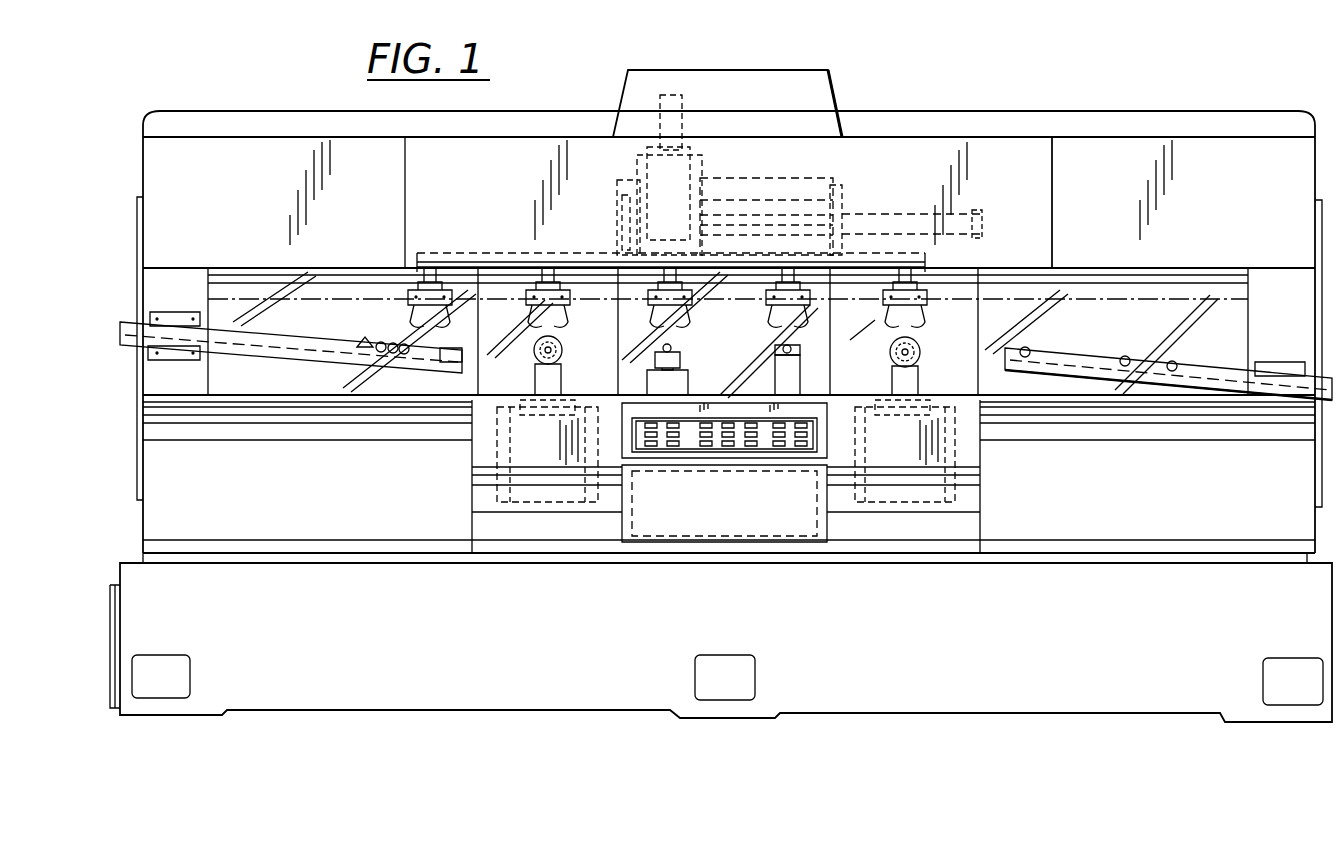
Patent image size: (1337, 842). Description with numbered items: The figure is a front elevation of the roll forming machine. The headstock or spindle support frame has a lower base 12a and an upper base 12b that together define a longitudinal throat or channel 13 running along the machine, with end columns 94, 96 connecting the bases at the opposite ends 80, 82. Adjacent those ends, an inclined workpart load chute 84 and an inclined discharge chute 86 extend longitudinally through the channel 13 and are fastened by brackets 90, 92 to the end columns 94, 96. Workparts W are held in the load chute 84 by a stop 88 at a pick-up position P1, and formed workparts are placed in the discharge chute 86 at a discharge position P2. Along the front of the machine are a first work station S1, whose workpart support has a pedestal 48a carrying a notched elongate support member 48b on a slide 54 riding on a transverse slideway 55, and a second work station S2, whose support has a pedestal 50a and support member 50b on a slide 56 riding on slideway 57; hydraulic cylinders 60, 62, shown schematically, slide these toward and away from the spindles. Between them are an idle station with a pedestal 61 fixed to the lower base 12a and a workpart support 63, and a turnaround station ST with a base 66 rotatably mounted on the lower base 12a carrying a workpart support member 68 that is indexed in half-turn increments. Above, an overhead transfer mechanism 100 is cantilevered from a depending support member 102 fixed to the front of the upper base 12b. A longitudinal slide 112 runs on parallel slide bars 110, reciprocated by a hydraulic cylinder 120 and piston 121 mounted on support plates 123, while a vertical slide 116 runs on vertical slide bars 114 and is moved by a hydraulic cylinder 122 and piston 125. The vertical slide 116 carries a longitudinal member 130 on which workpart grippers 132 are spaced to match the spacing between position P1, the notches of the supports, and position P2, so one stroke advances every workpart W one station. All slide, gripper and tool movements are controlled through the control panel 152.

The machine end 80 is at (150, 125).
The machine end 82 is at (1318, 125).
The lower base 12a is at (1045, 705).
The upper base 12b is at (1222, 150).
The longitudinal throat or channel 13 is at (1165, 316).
The overhead transfer mechanism 100 is at (868, 165).
The depending support member 102 is at (790, 140).
The slide bars 110 is at (840, 150).
The longitudinal slide 112 is at (725, 170).
The vertical slide bars 114 is at (660, 190).
The transverse or vertical slide 116 is at (637, 172).
The hydraulic cylinder 120 is at (965, 222).
The piston 121 is at (846, 195).
The hydraulic cylinder 122 is at (670, 95).
The support plates 123 is at (800, 215).
The piston 125 is at (690, 170).
The longitudinal member 130 is at (487, 265).
The workpart grippers 132 is at (412, 320).
The control panel 152 is at (690, 445).
The pedestal 48a is at (536, 378).
The elongate support member 48b is at (563, 352).
The pedestal 50a is at (918, 380).
The elongate support member 50b is at (892, 360).
The slide 54 is at (547, 451).
The transverse slideway 55 is at (558, 445).
The slide 56 is at (905, 451).
The transverse slideway 57 is at (912, 440).
The hydraulic cylinder 60 is at (500, 440).
The pedestal 61 is at (775, 385).
The hydraulic cylinder 62 is at (960, 460).
The workpart support 63 is at (790, 351).
The base 66 is at (688, 376).
The workpart support member 68 is at (680, 354).
The workpart load chute 84 is at (295, 338).
The workpart discharge or unload chute 86 is at (1216, 372).
The stop 88 is at (435, 372).
The bracket 90 is at (175, 318).
The bracket 92 is at (1283, 362).
The end column 94 is at (205, 280).
The end column 96 is at (1283, 280).
The workpart shaft W is at (740, 312).
The pick-up position P1 is at (440, 342).
The discharge position P2 is at (1045, 345).
The first work station S1 is at (528, 351).
The second work station S2 is at (928, 356).
The turnaround station ST is at (642, 328).